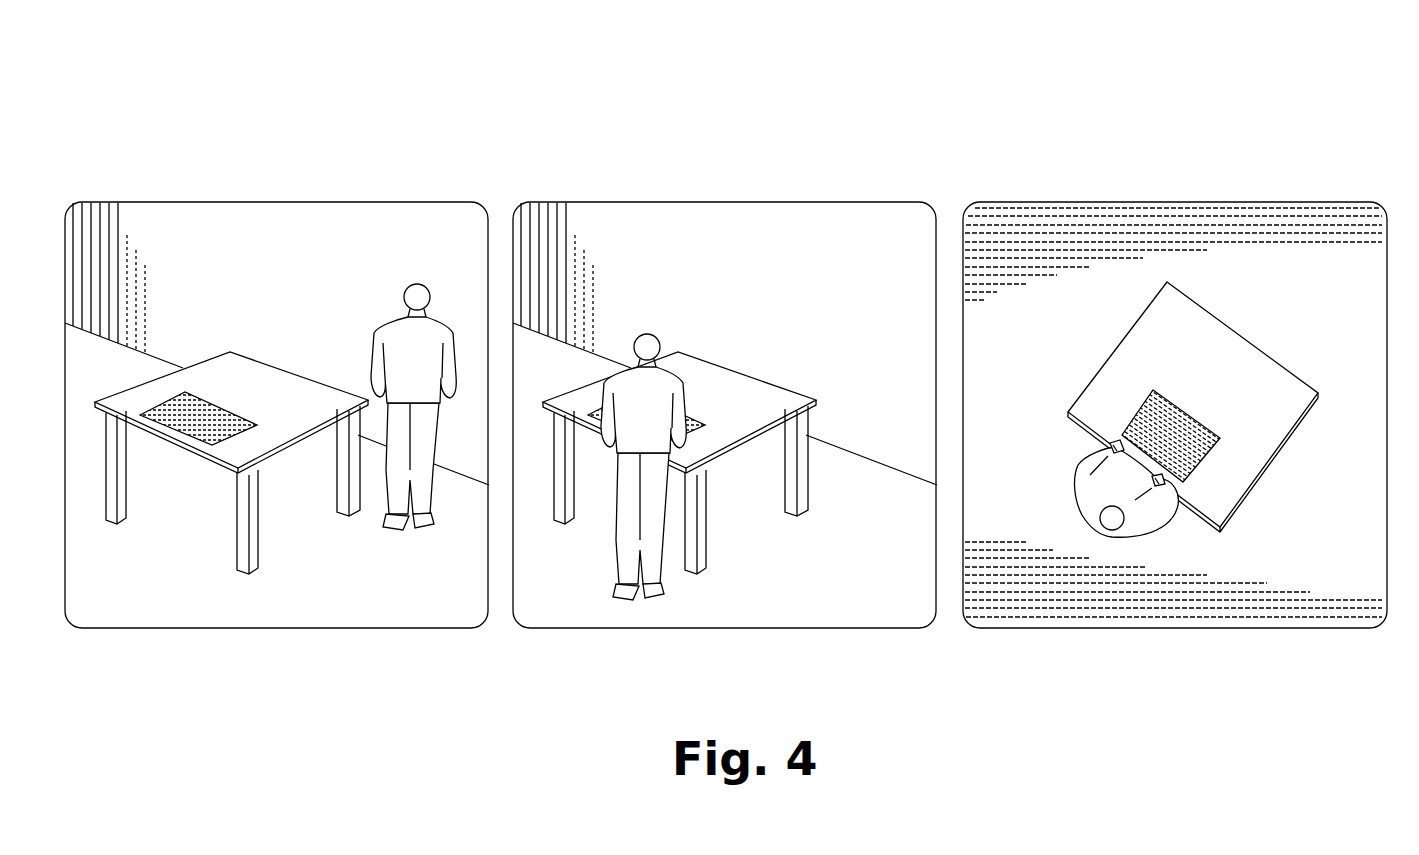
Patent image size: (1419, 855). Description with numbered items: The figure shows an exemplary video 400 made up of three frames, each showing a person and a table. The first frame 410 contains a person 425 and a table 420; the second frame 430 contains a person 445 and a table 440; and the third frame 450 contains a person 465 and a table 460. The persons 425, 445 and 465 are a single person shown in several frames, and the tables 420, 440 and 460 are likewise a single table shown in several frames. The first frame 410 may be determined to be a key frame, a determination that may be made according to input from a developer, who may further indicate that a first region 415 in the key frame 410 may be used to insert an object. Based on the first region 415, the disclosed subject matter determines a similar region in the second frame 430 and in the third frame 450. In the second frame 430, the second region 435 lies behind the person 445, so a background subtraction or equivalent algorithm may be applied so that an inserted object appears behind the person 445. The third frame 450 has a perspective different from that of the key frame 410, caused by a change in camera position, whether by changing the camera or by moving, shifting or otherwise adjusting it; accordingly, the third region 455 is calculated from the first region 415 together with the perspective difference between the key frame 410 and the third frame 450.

The video 400 is at (1200, 67).
The first frame 410 is at (333, 202).
The first region 415 is at (222, 412).
The table 420 is at (268, 364).
The person 425 is at (417, 283).
The second frame 430 is at (781, 202).
The second region 435 is at (690, 428).
The table 440 is at (740, 371).
The person 445 is at (648, 333).
The third frame 450 is at (1232, 202).
The third region 455 is at (1195, 462).
The table 460 is at (1145, 310).
The person 465 is at (1093, 527).